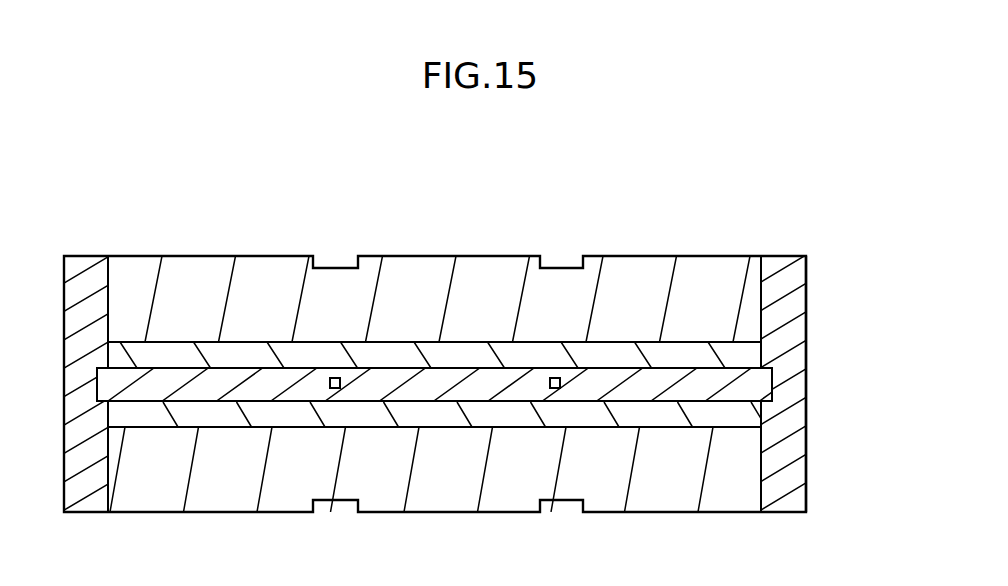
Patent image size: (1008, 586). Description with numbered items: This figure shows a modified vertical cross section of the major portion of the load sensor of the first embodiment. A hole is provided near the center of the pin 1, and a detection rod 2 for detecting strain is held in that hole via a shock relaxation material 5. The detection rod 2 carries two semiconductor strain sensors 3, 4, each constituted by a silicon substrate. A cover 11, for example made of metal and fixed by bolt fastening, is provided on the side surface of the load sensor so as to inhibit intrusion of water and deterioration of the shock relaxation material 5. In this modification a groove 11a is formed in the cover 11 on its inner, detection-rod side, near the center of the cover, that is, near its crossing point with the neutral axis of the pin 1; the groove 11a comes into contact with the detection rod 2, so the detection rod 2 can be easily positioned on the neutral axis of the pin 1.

The pin 1 is at (183, 287).
The detection rod 2 is at (398, 385).
The semiconductor strain sensor 3 is at (337, 378).
The semiconductor strain sensor 4 is at (554, 377).
The shock relaxation material 5 is at (475, 352).
The cover 11 is at (777, 310).
The groove 11a is at (806, 363).